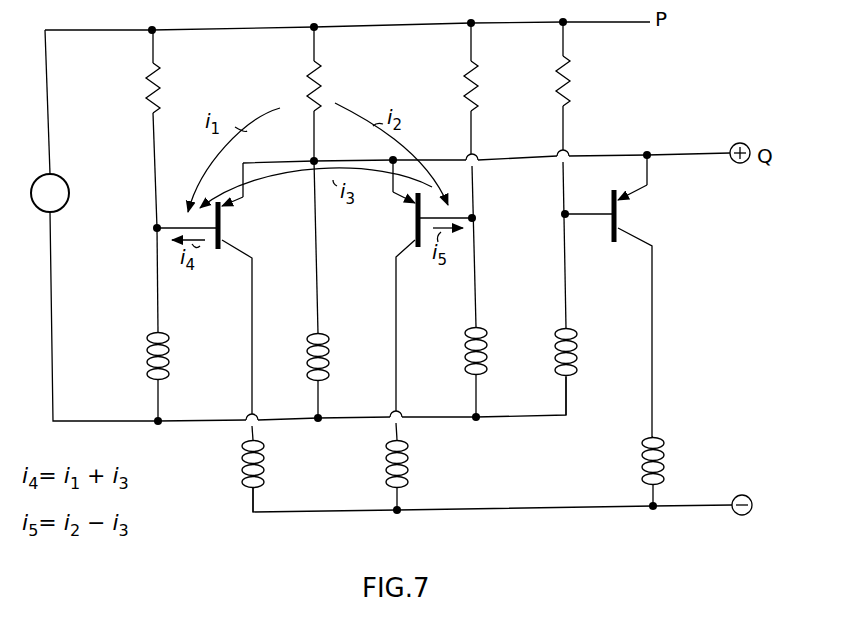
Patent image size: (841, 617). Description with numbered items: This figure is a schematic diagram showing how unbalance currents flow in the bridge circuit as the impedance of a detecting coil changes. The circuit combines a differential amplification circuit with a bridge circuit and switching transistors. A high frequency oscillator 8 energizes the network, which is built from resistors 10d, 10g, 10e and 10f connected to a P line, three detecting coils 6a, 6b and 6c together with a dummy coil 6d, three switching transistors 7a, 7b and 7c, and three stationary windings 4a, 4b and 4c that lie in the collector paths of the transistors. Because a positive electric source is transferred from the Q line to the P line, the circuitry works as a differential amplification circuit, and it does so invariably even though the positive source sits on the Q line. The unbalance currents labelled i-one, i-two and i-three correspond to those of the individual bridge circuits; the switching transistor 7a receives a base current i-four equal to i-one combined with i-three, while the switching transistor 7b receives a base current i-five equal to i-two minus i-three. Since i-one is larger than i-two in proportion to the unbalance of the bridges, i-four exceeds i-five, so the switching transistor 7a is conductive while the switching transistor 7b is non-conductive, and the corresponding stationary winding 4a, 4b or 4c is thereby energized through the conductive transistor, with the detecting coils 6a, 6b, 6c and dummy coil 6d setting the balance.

The high frequency oscillator 8 is at (57, 205).
The resistor 10d is at (145, 85).
The resistor 10g is at (308, 84).
The resistor 10e is at (465, 79).
The resistor 10f is at (555, 76).
The switching transistor 7a is at (225, 230).
The switching transistor 7b is at (410, 219).
The switching transistor 7c is at (625, 214).
The detecting coil 6a is at (145, 360).
The dummy coil 6d is at (305, 357).
The detecting coil 6b is at (460, 357).
The detecting coil 6c is at (554, 347).
The stationary winding 4a is at (261, 470).
The stationary winding 4b is at (406, 470).
The stationary winding 4c is at (641, 449).